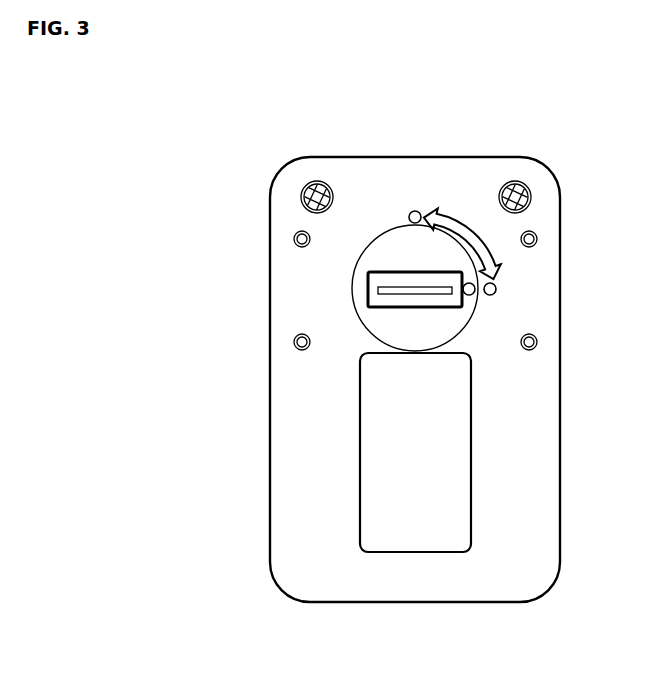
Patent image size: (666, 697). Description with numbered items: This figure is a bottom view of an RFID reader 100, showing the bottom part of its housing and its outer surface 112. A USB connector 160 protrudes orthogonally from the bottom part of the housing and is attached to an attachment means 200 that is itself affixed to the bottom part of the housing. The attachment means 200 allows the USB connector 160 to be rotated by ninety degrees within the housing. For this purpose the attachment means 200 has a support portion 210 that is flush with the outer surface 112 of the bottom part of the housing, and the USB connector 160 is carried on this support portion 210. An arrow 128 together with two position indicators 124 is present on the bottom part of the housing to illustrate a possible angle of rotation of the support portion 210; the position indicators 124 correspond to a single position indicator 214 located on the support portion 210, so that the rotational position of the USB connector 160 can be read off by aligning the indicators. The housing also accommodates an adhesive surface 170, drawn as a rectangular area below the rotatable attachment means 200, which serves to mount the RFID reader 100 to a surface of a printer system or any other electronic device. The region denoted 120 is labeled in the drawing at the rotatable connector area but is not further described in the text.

The RFID reader 100 is at (590, 412).
The outer surface 112 is at (545, 497).
The rotary knob assembly 120 is at (344, 294).
The position indicators 124 is at (415, 211).
The arrow 128 is at (478, 238).
The USB connector 160 is at (375, 272).
The adhesive surface 170 is at (415, 525).
The attachment means 200 is at (400, 318).
The support portion 210 is at (445, 322).
The position indicator 214 is at (496, 289).